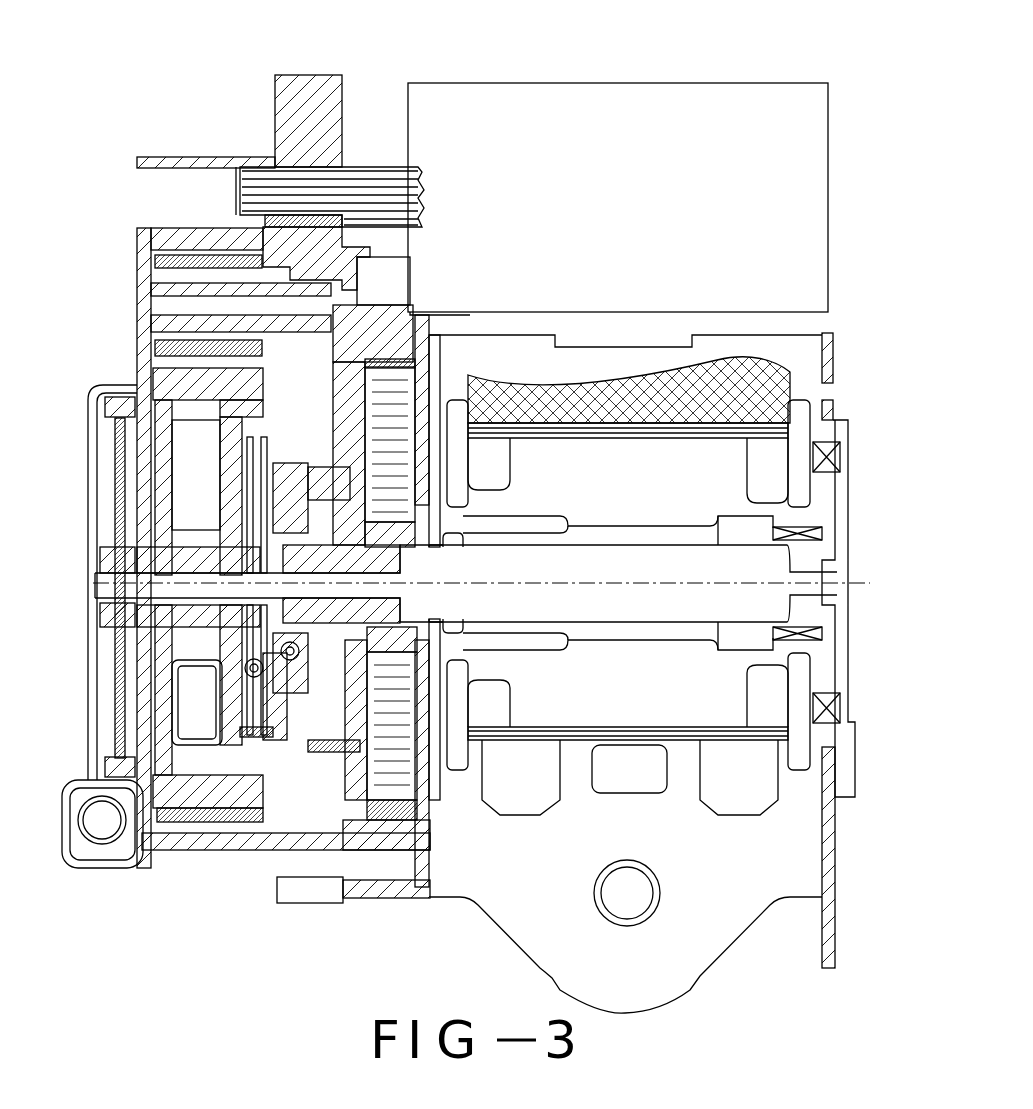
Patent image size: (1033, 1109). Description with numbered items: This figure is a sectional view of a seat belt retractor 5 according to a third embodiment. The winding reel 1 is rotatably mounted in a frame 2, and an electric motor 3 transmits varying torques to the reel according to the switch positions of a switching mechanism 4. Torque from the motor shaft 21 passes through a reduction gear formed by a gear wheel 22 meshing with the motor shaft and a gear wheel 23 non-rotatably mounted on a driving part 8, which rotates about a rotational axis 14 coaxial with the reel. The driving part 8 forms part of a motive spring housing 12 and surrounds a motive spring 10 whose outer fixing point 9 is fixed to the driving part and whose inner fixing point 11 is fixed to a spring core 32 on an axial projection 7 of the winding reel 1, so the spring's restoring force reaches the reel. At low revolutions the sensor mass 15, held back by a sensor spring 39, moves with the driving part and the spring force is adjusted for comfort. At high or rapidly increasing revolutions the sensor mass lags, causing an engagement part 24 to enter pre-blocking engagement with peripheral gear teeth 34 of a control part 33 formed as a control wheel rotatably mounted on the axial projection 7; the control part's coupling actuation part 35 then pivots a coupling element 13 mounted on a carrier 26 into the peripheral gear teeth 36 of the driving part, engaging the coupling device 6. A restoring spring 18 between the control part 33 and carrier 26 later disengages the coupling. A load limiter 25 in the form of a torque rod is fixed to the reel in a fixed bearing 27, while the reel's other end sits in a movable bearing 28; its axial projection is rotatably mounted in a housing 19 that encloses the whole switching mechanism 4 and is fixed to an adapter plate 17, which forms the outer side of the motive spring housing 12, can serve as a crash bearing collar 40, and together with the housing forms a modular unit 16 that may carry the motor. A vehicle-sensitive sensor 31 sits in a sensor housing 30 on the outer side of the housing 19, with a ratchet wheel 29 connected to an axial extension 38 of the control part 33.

The winding reel 1 is at (660, 692).
The frame 2 is at (752, 880).
The electric motor 3 is at (508, 115).
The switching mechanism 4 is at (128, 365).
The seat belt retractor 5 is at (715, 388).
The coupling device 6 is at (200, 488).
The axial projection 7 is at (185, 596).
The driving part 8 is at (225, 410).
The outer fixing point 9 is at (410, 360).
The motive spring 10 is at (400, 792).
The inner fixing point 11 is at (402, 655).
The motive spring housing 12 is at (452, 343).
The coupling element 13 is at (335, 442).
The rotational axis 14 is at (752, 580).
The sensor mass 15 is at (245, 548).
The modular unit 16 is at (166, 878).
The adapter plate 17 is at (371, 843).
The restoring spring 18 is at (290, 658).
The housing 19 is at (152, 325).
The motor shaft 21 is at (238, 190).
The gear wheel 22 is at (293, 248).
The gear wheel 23 is at (180, 815).
The engagement part 24 is at (245, 468).
The load limiter 25 is at (682, 590).
The carrier 26 is at (275, 578).
The fixed bearing 27 is at (546, 530).
The movable bearing 28 is at (795, 520).
The ratchet wheel 29 is at (120, 677).
The sensor housing 30 is at (75, 843).
The sensor 31 is at (103, 820).
The spring core 32 is at (397, 530).
The control part 33 is at (280, 630).
The peripheral gear teeth 34 is at (256, 735).
The coupling actuation part 35 is at (328, 512).
The peripheral gear teeth 36 is at (322, 750).
The axial extension 38 is at (100, 606).
The sensor spring 39 is at (255, 668).
The crash bearing collar 40 is at (422, 630).